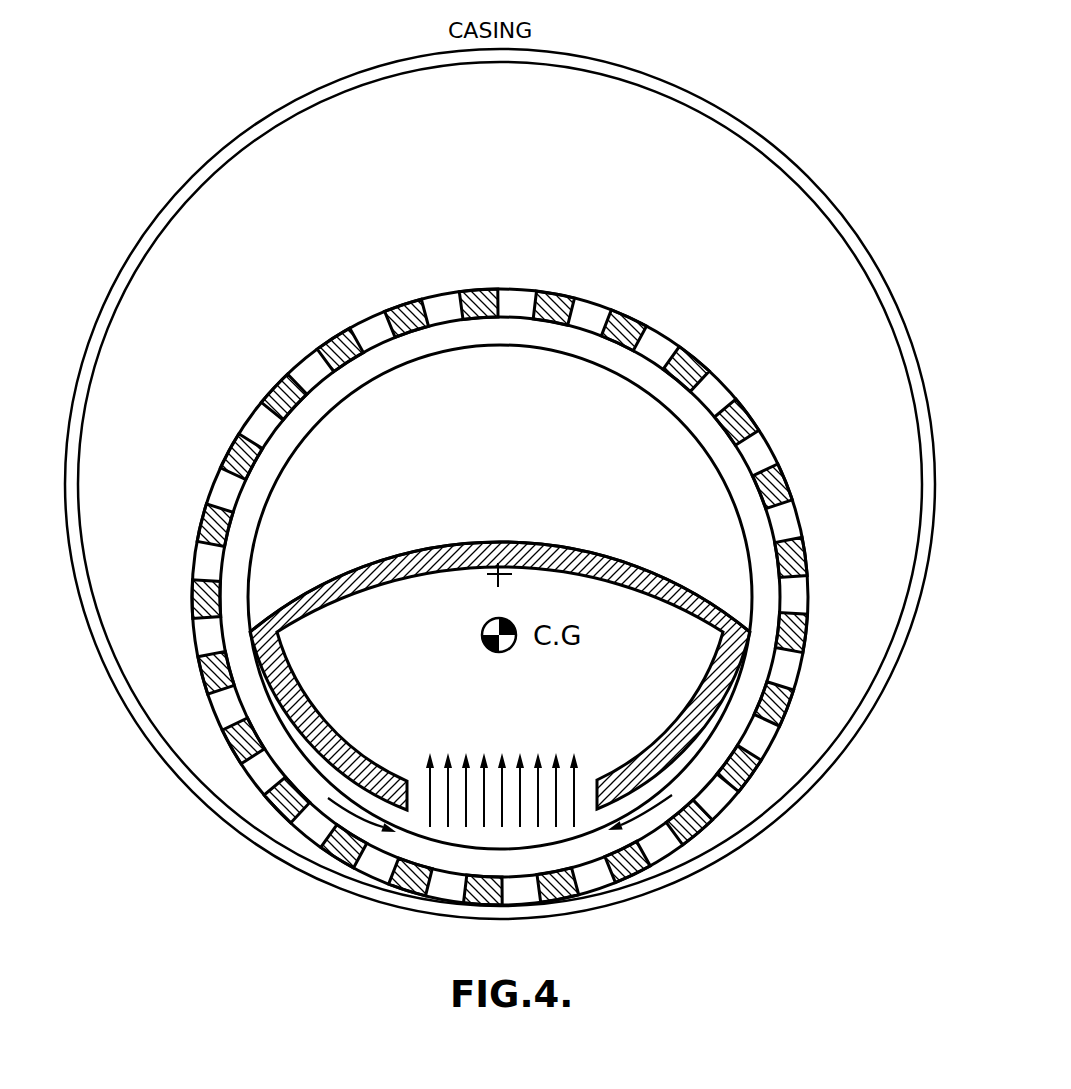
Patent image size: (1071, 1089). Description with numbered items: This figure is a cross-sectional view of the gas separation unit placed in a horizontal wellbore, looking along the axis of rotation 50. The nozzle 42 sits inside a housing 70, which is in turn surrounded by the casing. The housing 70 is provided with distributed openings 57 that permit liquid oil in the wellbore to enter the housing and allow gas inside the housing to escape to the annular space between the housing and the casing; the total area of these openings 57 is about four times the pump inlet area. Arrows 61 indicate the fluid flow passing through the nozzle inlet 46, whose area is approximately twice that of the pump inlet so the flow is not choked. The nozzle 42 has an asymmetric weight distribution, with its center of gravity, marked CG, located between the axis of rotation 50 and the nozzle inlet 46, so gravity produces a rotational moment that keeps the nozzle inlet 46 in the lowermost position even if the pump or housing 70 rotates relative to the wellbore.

The housing 70 is at (500, 578).
The openings 57 is at (671, 340).
The axis of rotation 50 is at (490, 545).
The nozzle 42 is at (712, 733).
The arrows 61 is at (502, 772).
The nozzle inlet 46 is at (578, 815).